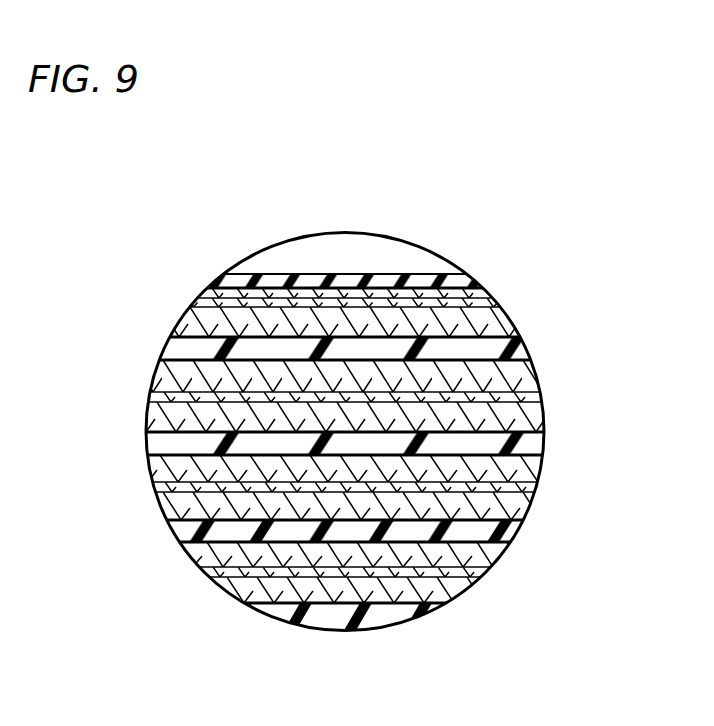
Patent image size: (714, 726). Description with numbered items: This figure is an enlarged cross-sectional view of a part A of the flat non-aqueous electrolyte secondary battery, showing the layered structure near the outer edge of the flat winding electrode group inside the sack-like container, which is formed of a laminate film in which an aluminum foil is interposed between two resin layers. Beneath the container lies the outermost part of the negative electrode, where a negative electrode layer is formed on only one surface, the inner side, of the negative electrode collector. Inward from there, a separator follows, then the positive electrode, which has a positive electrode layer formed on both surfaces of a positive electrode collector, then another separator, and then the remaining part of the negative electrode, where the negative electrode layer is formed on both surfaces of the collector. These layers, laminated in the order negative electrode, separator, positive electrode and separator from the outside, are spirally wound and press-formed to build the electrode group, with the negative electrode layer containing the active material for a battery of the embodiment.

The part A is at (258, 262).